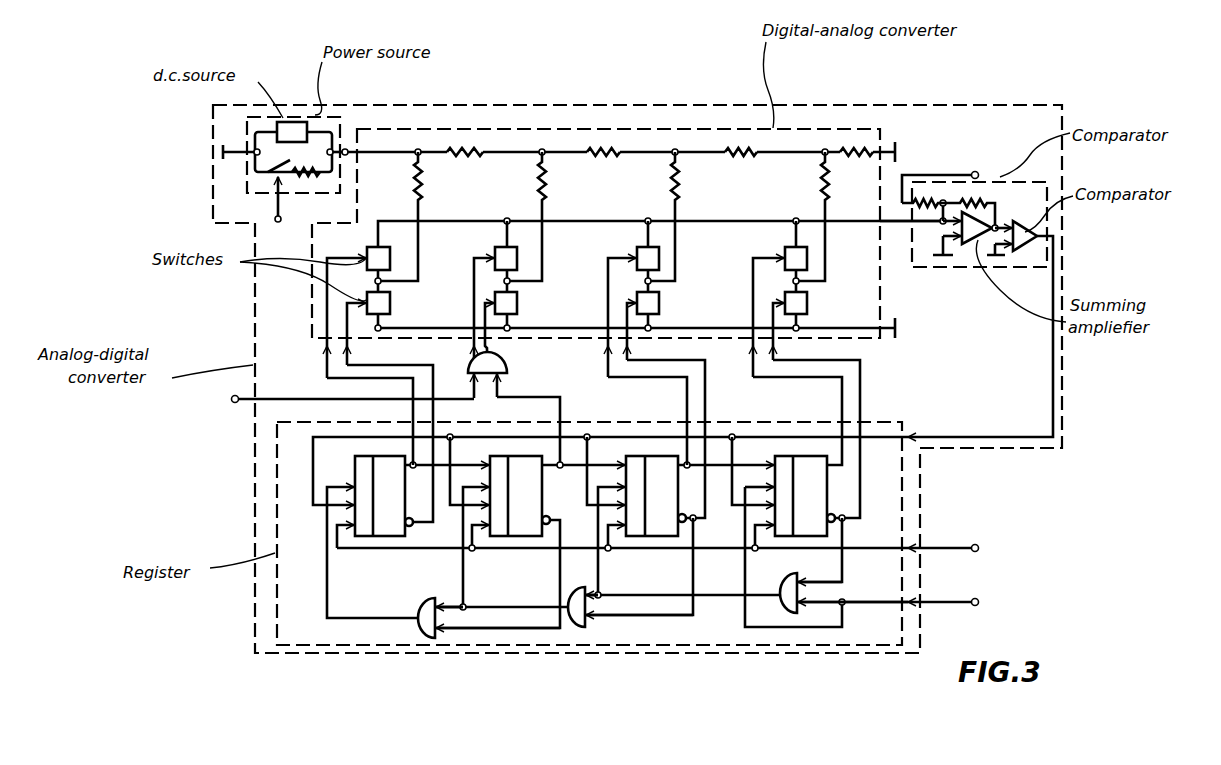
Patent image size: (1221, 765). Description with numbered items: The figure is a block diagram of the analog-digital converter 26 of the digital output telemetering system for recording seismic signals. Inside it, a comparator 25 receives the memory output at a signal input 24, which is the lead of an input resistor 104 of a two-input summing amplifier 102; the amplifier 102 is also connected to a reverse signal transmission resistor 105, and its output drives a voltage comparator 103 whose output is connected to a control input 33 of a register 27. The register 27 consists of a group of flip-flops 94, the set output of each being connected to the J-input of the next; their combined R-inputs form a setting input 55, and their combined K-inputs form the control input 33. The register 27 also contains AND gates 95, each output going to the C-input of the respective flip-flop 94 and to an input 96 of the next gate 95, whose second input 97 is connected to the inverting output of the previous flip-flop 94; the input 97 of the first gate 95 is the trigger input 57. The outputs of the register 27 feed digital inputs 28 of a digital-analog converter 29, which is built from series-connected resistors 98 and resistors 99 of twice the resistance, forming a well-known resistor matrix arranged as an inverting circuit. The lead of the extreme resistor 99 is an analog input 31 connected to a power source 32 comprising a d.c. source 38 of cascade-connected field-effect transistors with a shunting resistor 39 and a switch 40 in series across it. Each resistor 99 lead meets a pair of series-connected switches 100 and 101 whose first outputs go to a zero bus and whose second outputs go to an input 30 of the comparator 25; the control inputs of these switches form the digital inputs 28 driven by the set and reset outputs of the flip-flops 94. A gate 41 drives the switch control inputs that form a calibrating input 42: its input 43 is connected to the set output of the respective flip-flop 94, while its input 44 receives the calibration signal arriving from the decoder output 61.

The signal input 24 is at (941, 212).
The comparator 25 is at (990, 176).
The analog-digital converter 26 is at (250, 318).
The register 27 is at (273, 597).
The digital inputs 28 is at (323, 347).
The digital-analog converter 29 is at (842, 127).
The input of the comparator 30 is at (908, 224).
The analog input 31 is at (354, 156).
The power source 32 is at (317, 112).
The control input 33 is at (906, 435).
The d.c. source 38 is at (297, 120).
The shunting resistor 39 is at (312, 177).
The switch 40 is at (283, 163).
The OR gate 41 is at (508, 365).
The calibrating input 42 is at (482, 344).
The input of the OR gate 43 is at (500, 378).
The second input of the OR gate 44 is at (471, 378).
The setting input 55 is at (966, 549).
The trigger input 57 is at (911, 606).
The output of the decoder 61 is at (332, 407).
The flip-flops 94 is at (400, 487).
The AND gates 95 is at (420, 615).
The input of the AND gate 96 is at (438, 603).
The second input of the AND gate 97 is at (440, 638).
The series-connected resistors 98 is at (473, 156).
The resistors 99 is at (424, 182).
The switch 100 is at (366, 249).
The switch 101 is at (385, 302).
The summing amplifier 102 is at (975, 238).
The voltage comparator 103 is at (1025, 230).
The input resistor 104 is at (930, 200).
The reverse signal transmission resistor 105 is at (985, 200).